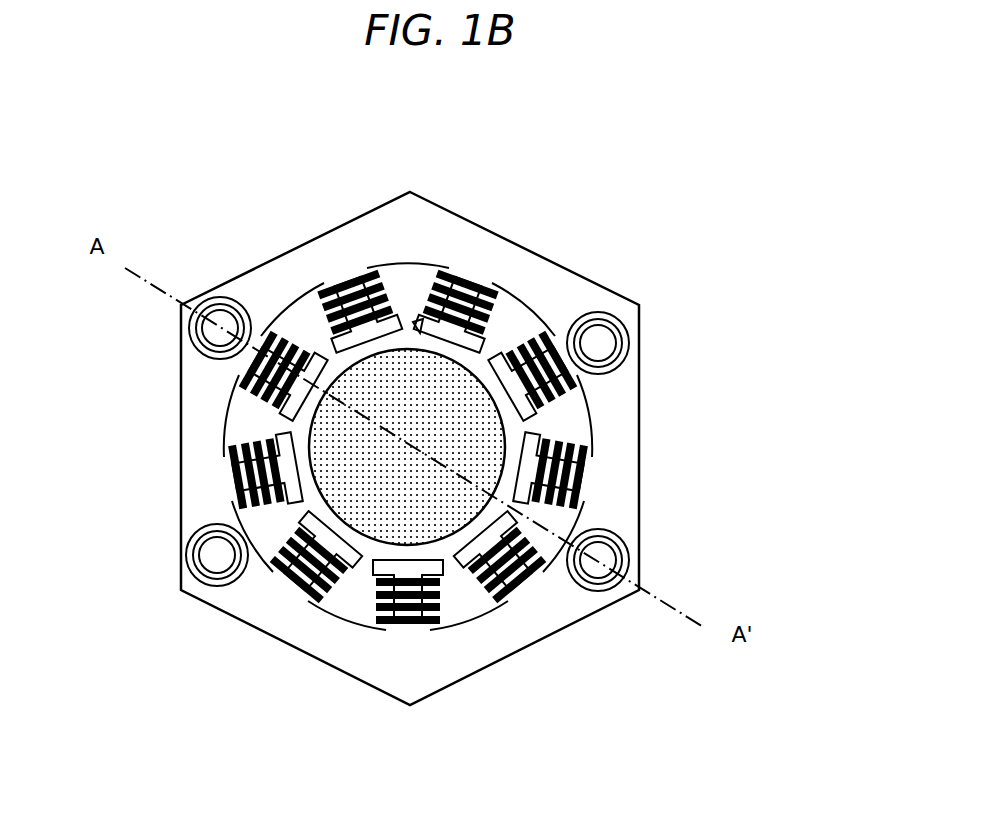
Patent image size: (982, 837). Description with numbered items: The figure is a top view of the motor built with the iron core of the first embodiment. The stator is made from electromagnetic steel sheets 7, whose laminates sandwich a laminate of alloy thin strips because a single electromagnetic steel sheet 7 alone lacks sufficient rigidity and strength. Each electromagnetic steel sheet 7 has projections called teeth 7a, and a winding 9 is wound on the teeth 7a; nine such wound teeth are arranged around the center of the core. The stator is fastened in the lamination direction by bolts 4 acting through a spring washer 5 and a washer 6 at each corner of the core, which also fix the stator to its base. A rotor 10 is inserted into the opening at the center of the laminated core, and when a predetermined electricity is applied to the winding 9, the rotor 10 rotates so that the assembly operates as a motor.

The bolt 4 is at (607, 340).
The spring washer 5 is at (623, 345).
The washer 6 is at (617, 380).
The electromagnetic steel sheet 7 is at (502, 630).
The teeth 7a is at (417, 322).
The winding 9 is at (335, 293).
The rotor 10 is at (437, 420).